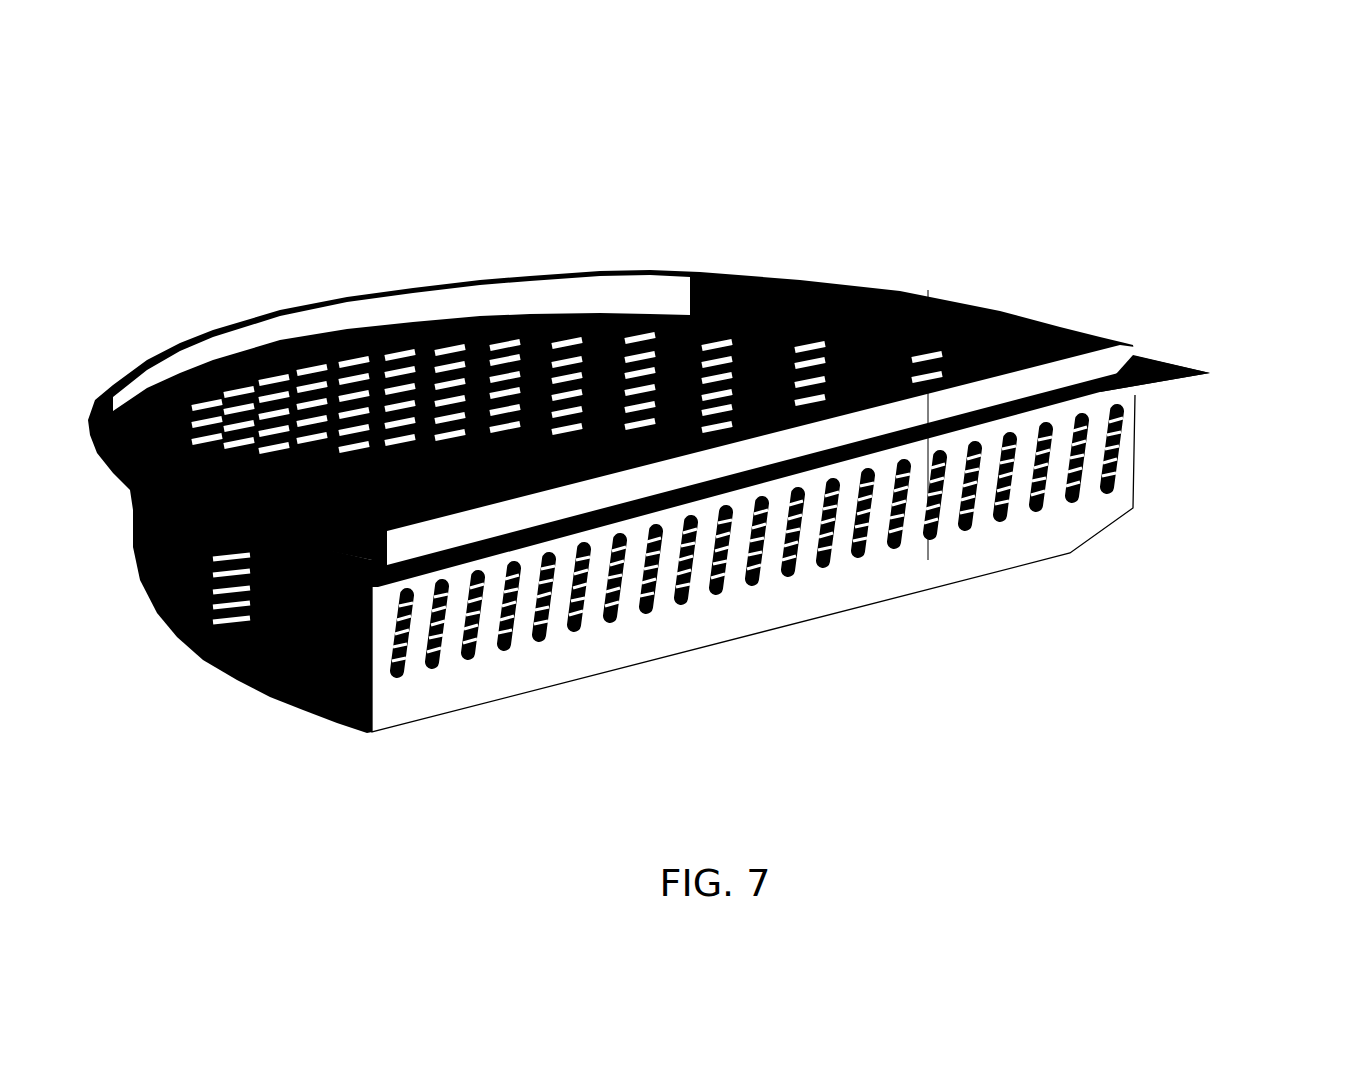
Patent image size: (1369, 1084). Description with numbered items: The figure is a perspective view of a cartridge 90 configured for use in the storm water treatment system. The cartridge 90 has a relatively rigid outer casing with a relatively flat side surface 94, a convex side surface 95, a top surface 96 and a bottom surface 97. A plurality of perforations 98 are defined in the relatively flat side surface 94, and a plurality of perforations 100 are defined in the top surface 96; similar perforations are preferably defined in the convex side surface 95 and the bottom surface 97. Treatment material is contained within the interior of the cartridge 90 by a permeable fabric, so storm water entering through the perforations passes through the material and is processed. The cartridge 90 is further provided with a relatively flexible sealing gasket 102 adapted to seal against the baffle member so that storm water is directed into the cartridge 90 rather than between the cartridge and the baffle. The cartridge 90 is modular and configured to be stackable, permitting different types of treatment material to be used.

The cartridge 90 is at (942, 226).
The relatively flat side surface 94 is at (767, 605).
The convex side surface 95 is at (327, 648).
The top surface 96 is at (420, 357).
The bottom surface 97 is at (218, 623).
The perforations 98 is at (828, 547).
The perforations 100 is at (575, 362).
The sealing gasket 102 is at (1177, 378).